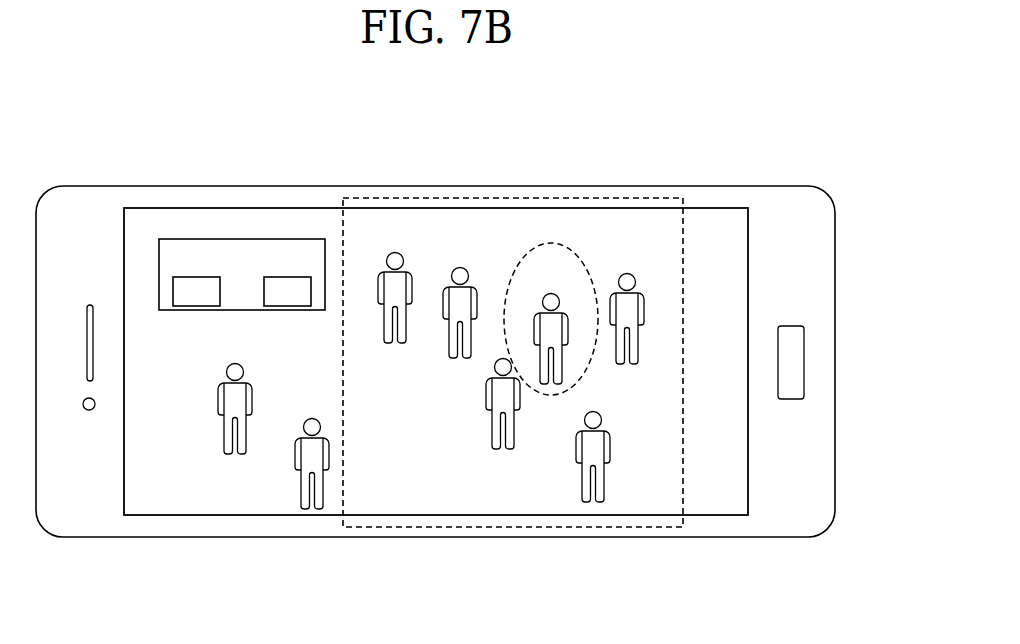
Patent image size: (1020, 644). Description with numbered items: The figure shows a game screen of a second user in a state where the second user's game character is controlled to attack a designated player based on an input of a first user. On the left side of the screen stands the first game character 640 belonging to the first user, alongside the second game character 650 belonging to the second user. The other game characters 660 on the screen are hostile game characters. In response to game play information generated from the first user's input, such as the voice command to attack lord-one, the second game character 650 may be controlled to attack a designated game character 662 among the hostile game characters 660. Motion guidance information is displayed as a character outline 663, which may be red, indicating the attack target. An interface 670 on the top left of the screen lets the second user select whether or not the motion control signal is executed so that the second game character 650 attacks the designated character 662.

The first game character 640 is at (226, 454).
The second game character 650 is at (305, 509).
The hostile game characters 660 is at (522, 197).
The designated game character 662 is at (551, 243).
The character outline 663 is at (545, 385).
The interface 670 is at (233, 238).